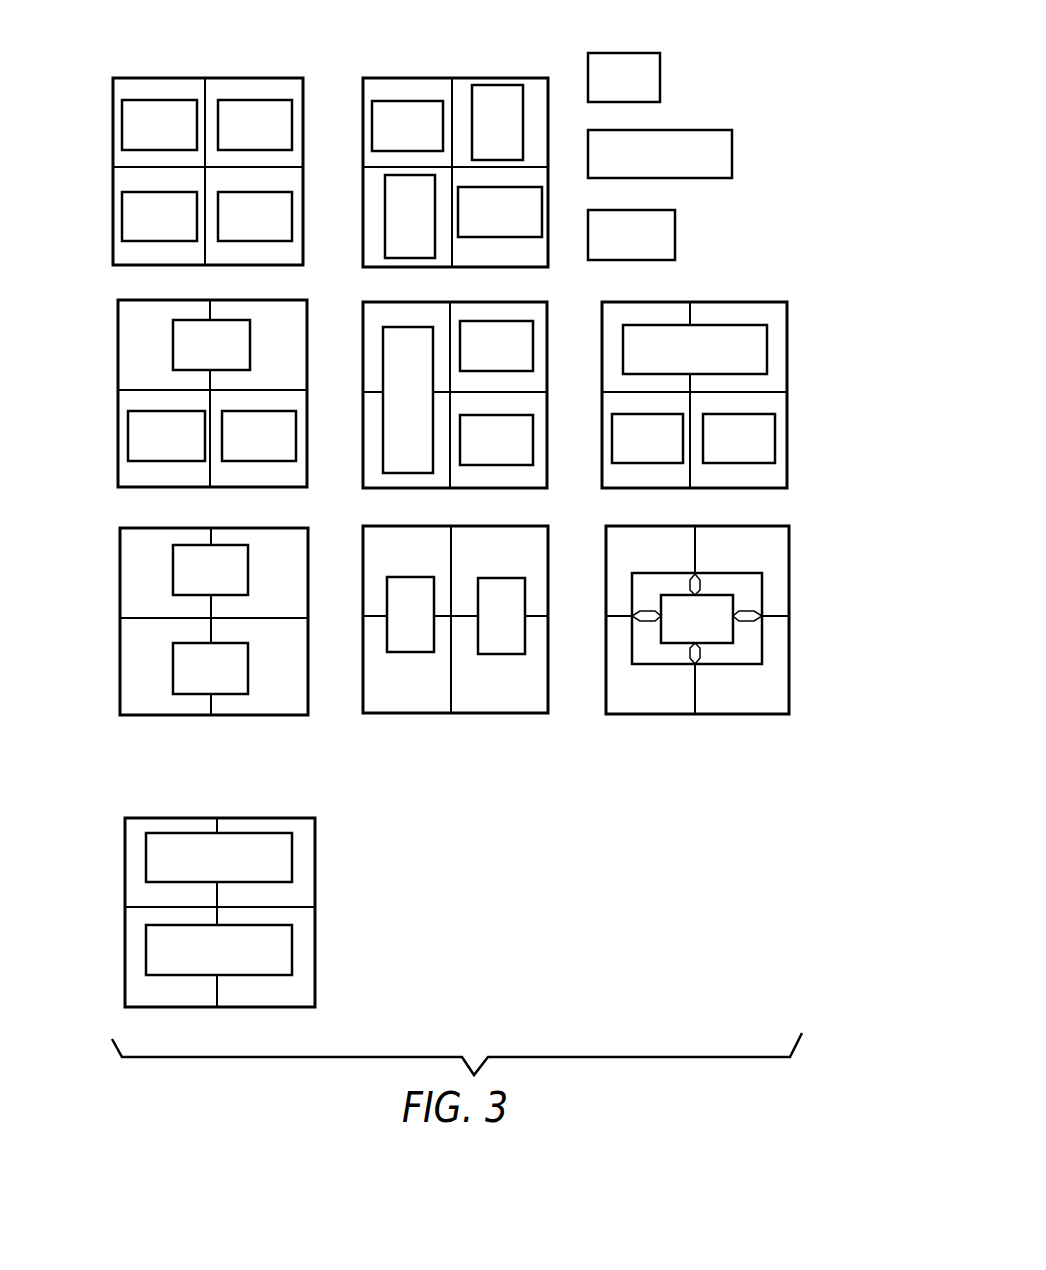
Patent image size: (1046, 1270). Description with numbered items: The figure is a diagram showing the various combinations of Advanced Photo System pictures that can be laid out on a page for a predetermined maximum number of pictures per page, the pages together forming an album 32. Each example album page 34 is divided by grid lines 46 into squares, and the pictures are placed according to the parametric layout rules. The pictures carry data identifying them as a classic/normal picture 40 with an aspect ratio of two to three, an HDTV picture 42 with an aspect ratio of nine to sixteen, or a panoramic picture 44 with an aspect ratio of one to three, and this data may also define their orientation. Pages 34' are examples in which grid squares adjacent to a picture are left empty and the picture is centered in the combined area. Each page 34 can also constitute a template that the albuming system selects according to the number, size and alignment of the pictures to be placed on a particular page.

The album 32 is at (258, 817).
The album pages 34 is at (486, 369).
The pages 34' is at (450, 507).
The classic/normal picture 40 is at (270, 108).
The HDTV picture 42 is at (384, 216).
The panoramic picture 44 is at (383, 452).
The grid lines 46 is at (128, 172).